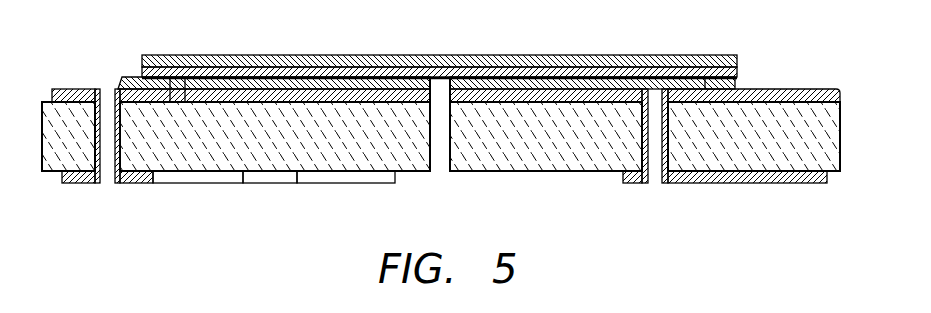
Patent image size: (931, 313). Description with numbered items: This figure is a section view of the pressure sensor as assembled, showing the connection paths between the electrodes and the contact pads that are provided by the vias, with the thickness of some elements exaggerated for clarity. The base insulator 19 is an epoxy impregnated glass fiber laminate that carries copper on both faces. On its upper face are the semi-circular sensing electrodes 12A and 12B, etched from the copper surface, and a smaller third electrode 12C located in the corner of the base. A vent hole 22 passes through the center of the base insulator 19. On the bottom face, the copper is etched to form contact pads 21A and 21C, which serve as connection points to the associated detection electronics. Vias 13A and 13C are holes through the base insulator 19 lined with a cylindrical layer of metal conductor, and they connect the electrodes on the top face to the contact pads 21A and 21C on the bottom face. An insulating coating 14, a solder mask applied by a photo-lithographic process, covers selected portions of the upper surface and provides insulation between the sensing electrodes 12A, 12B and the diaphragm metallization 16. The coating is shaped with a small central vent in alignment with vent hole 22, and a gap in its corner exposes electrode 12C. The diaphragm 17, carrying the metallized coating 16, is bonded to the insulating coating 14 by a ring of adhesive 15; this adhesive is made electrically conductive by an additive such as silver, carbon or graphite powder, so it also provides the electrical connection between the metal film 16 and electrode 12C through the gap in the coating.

The third electrode 12C is at (80, 89).
The sensing electrode 12B is at (392, 103).
The sensing electrode 12A is at (568, 103).
The via 13C is at (107, 186).
The via 13A is at (655, 184).
The insulating coating 14 is at (180, 84).
The adhesive 15 is at (133, 83).
The metallized coating 16 is at (735, 72).
The diaphragm 17 is at (633, 54).
The base insulator 19 is at (492, 158).
The contact pad 21C is at (266, 186).
The contact pad 21A is at (790, 184).
The vent hole 22 is at (437, 172).